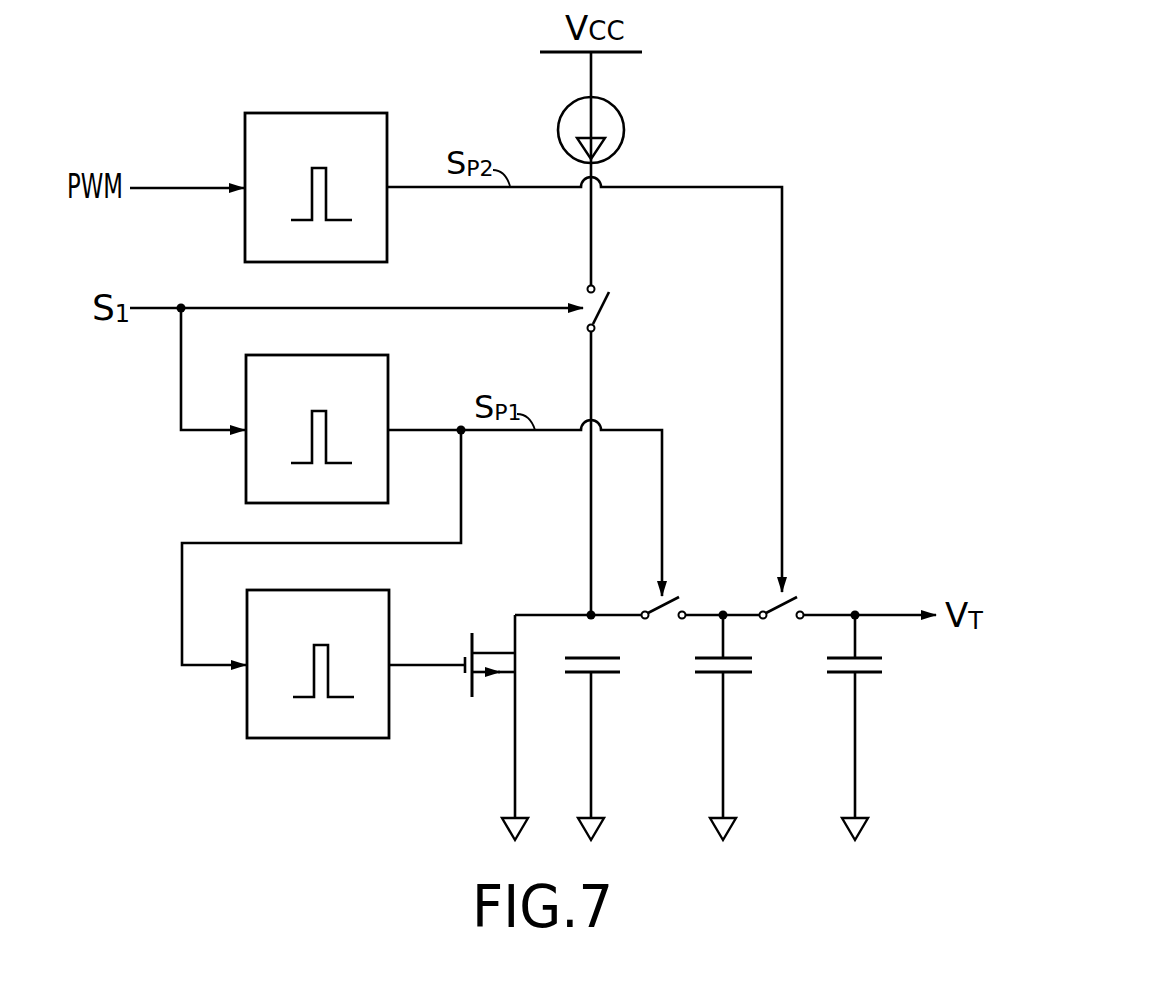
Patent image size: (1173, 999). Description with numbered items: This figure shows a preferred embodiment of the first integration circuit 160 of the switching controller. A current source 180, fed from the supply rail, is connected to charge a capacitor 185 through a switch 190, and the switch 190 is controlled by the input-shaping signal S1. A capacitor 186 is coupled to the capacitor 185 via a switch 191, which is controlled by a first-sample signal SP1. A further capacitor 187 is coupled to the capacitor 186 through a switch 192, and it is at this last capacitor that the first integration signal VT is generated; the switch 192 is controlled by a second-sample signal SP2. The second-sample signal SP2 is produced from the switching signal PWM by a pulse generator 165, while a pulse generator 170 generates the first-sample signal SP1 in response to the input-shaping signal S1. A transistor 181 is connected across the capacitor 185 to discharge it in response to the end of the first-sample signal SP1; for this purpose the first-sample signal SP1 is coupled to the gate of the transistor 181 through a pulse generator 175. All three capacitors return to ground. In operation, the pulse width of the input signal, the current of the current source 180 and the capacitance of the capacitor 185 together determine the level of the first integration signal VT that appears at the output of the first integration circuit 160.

The first integration circuit 160 is at (873, 96).
The pulse generator 165 is at (268, 112).
The pulse generator 170 is at (246, 458).
The pulse generator 175 is at (265, 739).
The current source 180 is at (624, 127).
The transistor 181 is at (472, 687).
The capacitor 185 is at (606, 674).
The capacitor 186 is at (738, 674).
The capacitor 187 is at (870, 674).
The switch 190 is at (608, 312).
The switch 191 is at (679, 597).
The switch 192 is at (797, 597).